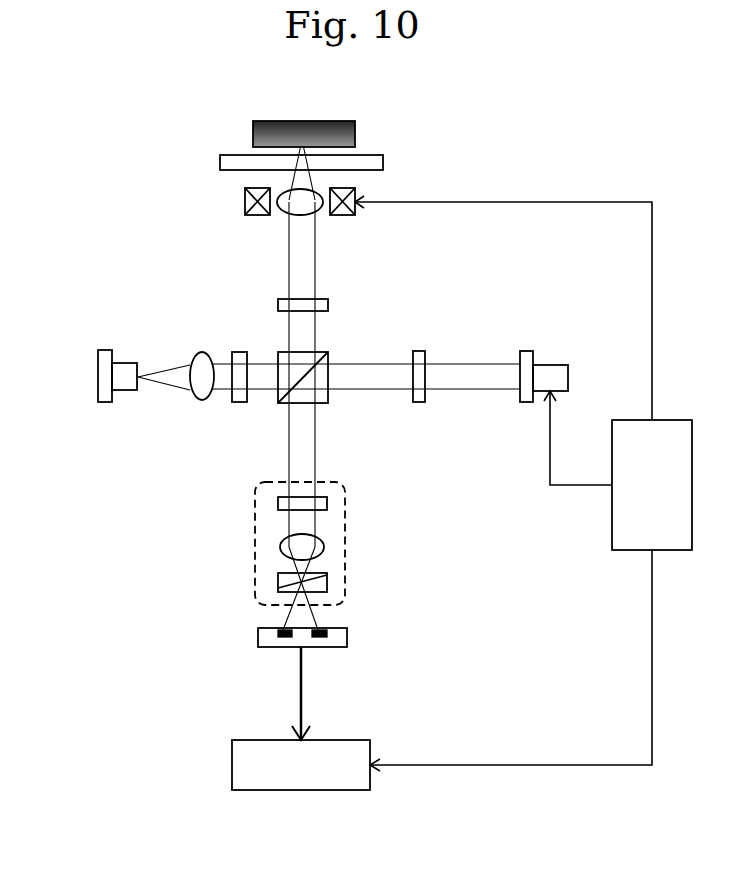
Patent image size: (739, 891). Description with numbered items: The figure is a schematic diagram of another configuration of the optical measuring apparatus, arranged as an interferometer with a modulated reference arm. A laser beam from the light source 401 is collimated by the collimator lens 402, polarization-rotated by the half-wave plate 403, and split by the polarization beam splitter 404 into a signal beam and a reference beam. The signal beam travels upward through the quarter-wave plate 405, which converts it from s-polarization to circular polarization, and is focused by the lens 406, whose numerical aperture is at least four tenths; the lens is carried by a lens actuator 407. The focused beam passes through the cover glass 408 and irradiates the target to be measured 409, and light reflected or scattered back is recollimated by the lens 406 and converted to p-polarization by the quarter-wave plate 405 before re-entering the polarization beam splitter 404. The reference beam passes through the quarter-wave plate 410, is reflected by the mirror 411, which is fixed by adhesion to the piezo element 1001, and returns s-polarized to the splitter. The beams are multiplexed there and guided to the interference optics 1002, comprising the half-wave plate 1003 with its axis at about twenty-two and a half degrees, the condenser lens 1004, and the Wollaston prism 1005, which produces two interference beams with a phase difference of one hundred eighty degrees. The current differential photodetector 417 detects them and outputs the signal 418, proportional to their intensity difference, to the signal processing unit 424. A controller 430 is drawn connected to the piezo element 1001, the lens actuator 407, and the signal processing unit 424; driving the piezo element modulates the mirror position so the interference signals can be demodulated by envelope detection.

The light source 401 is at (98, 372).
The collimator lens 402 is at (195, 360).
The λ/2 plate 403 is at (238, 402).
The polarization beam splitter 404 is at (278, 355).
The λ/4 plate 405 is at (278, 303).
The lens 406 is at (313, 209).
The lens actuator 407 is at (356, 189).
The cover glass 408 is at (220, 162).
The target to be measured 409 is at (253, 131).
The λ/4 plate 410 is at (420, 351).
The mirror 411 is at (528, 351).
The piezo element 1001 is at (568, 366).
The controller 430 is at (688, 420).
The interference optics 1002 is at (255, 540).
The λ/2 plate 1003 is at (327, 503).
The condenser lens 1004 is at (324, 547).
The Wollaston prism 1005 is at (327, 582).
The current differential photodetector 417 is at (347, 637).
The signal 418 is at (302, 670).
The signal processing unit 424 is at (266, 790).